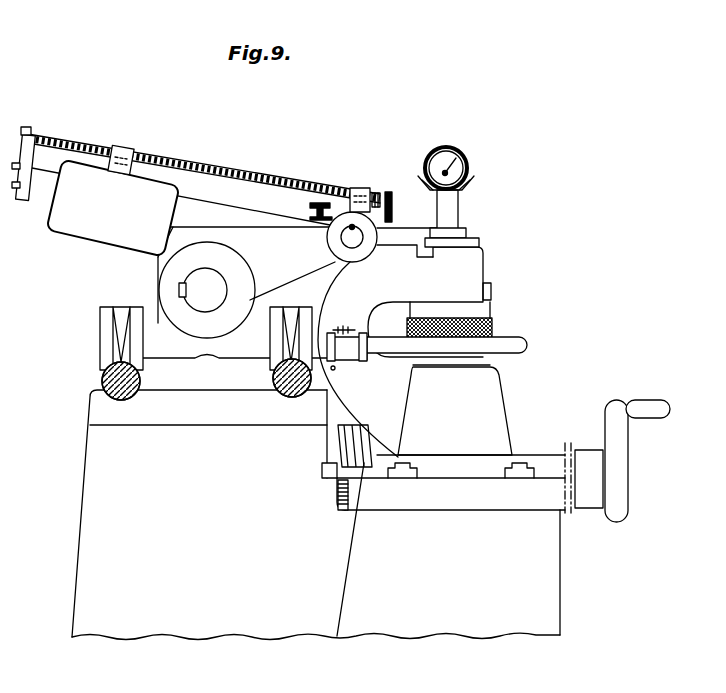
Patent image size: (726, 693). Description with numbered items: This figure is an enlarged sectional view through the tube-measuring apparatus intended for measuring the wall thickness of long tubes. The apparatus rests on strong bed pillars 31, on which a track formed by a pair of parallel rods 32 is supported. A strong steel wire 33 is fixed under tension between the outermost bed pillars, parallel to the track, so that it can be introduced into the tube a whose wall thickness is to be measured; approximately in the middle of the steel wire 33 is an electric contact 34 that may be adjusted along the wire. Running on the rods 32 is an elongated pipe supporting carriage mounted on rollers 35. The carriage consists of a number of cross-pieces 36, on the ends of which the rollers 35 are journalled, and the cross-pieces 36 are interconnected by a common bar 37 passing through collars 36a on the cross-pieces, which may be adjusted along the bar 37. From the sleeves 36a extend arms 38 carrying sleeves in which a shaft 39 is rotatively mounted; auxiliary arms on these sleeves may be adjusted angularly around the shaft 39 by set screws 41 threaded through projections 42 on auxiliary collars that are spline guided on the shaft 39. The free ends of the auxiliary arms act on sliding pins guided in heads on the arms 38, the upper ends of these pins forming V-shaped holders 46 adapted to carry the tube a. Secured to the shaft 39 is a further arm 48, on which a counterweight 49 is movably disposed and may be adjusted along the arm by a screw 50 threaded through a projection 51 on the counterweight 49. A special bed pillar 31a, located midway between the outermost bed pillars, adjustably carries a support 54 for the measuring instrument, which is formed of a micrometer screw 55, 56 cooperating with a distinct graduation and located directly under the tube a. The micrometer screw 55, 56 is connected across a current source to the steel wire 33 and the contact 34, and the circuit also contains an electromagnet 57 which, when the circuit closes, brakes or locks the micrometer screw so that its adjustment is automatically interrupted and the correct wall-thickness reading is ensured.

The bed pillar 31 is at (92, 507).
The special bed pillar 31a is at (356, 573).
The parallel rods 32 is at (122, 400).
The steel wire 33 is at (445, 173).
The electric contact 34 is at (425, 162).
The rollers 35 is at (100, 343).
The cross-piece 36 is at (252, 362).
The collar 36a is at (157, 300).
The common bar 37 is at (192, 283).
The arm 38 is at (257, 233).
The shaft 39 is at (347, 226).
The set screw 41 is at (320, 204).
The projection 42 is at (308, 216).
The V-shaped holder 46 is at (470, 176).
The further arm 48 is at (240, 172).
The counterweight 49 is at (90, 237).
The screw 50 is at (207, 200).
The projection 51 is at (126, 150).
The support 54 is at (478, 265).
The micrometer screw 55 is at (500, 340).
The micrometer screw 56 is at (455, 210).
The electromagnet 57 is at (362, 358).
The tube a is at (447, 150).